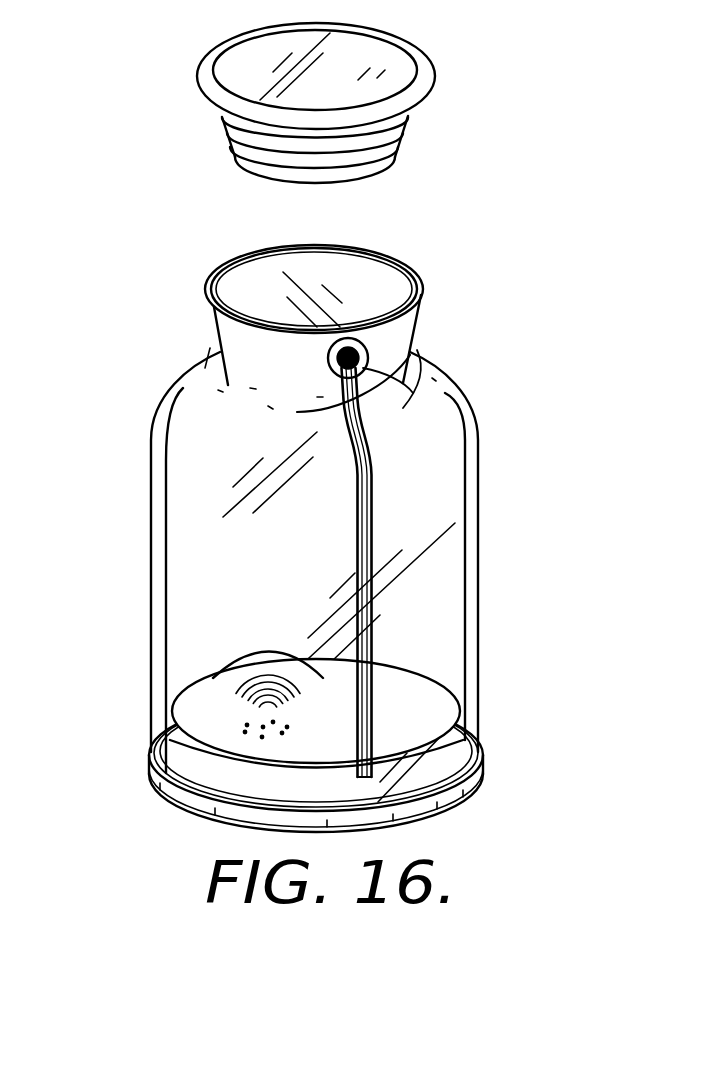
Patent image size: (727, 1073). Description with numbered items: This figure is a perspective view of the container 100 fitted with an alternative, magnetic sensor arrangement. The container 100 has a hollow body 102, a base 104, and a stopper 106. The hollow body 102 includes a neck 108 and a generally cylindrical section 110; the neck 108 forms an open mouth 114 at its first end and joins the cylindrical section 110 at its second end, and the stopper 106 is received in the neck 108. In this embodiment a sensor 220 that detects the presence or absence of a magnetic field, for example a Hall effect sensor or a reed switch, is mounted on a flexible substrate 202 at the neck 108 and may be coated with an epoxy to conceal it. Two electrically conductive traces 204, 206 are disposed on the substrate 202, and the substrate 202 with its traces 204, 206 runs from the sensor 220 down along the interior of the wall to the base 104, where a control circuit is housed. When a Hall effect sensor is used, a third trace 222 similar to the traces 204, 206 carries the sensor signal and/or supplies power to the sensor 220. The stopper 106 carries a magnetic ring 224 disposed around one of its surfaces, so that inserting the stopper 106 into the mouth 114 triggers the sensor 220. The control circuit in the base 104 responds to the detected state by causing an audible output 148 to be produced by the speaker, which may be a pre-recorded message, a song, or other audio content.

The container 100 is at (134, 383).
The hollow body 102 is at (474, 406).
The base 104 is at (451, 804).
The stopper 106 is at (384, 33).
The neck 108 is at (414, 333).
The cylindrical section 110 is at (481, 517).
The open mouth 114 is at (296, 268).
The audible output 148 is at (271, 650).
The flexible substrate 202 is at (409, 411).
The electrically conductive trace 204 is at (358, 544).
The electrically conductive trace 206 is at (372, 518).
The magnetic sensor 220 is at (330, 358).
The third trace 222 is at (358, 515).
The magnetic ring 224 is at (221, 137).